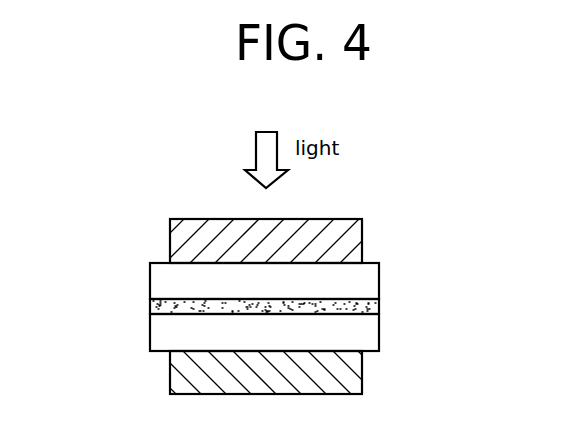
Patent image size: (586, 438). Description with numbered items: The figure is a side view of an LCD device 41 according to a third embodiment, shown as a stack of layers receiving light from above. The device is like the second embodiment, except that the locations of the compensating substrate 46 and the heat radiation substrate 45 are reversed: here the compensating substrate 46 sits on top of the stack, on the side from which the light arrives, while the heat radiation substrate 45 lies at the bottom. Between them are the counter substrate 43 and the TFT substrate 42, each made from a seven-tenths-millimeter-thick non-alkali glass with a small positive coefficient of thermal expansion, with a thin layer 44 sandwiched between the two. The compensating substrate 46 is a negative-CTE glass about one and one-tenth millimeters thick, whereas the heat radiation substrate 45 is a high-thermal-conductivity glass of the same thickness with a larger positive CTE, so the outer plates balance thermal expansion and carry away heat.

The LCD device 41 is at (138, 279).
The TFT substrate 42 is at (379, 331).
The counter substrate 43 is at (379, 279).
The light-control layer 44 is at (379, 307).
The heat radiation substrate 45 is at (362, 368).
The compensating substrate 46 is at (362, 245).